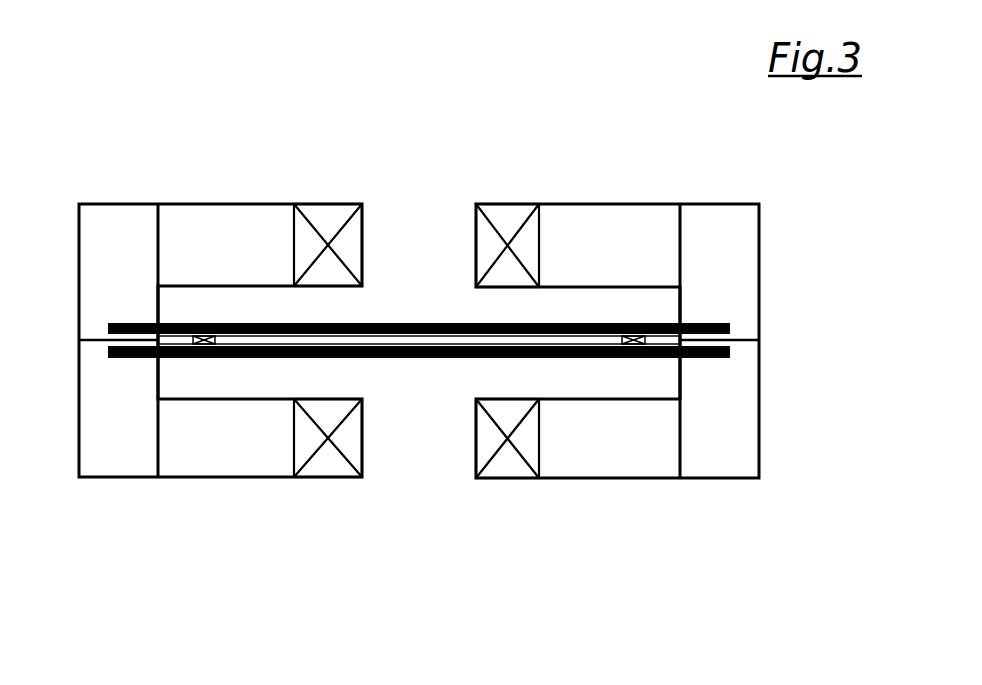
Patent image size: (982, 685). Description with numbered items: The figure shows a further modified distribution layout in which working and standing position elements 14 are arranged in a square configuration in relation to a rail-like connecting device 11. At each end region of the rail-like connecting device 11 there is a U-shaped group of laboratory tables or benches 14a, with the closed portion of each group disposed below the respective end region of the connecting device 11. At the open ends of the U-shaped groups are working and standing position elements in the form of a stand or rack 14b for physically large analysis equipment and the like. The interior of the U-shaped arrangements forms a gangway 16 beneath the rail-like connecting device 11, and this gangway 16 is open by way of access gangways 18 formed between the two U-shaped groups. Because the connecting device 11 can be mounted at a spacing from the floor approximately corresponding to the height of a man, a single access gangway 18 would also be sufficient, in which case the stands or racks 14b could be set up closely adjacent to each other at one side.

The working and standing position elements 14 is at (789, 199).
The laboratory tables or benches 14a is at (616, 235).
The stand or rack 14b is at (513, 217).
The rail-like connecting device 11 is at (733, 330).
The gangway 16 is at (210, 306).
The access gangways 18 is at (453, 222).